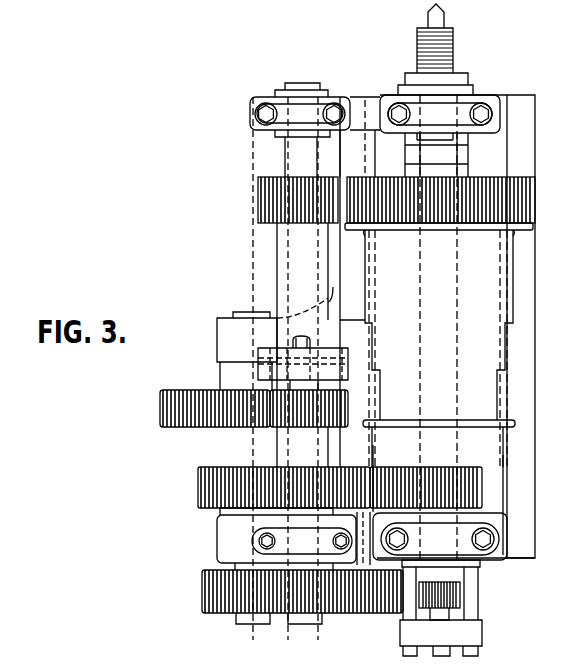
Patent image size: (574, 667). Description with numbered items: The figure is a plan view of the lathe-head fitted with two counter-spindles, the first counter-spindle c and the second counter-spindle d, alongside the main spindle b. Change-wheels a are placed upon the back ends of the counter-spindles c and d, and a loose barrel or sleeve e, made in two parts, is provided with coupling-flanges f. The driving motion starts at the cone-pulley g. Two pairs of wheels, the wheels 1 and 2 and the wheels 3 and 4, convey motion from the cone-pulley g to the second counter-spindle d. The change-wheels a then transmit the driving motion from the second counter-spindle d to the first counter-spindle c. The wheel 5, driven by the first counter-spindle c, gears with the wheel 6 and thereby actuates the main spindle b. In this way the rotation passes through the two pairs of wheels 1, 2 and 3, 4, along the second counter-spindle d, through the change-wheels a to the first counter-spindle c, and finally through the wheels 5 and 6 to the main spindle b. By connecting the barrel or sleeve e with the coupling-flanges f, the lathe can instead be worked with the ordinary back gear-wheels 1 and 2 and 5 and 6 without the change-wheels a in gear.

The wheel 1 is at (462, 491).
The wheel 2 is at (215, 492).
The wheel 3 is at (322, 402).
The wheel 4 is at (180, 408).
The wheel 5 is at (285, 199).
The wheel 6 is at (513, 197).
The change-wheels a is at (210, 592).
The main spindle b is at (441, 607).
The counter-spindle c is at (306, 628).
The second counter-spindle d is at (255, 616).
The loose barrel or sleeve e is at (302, 345).
The coupling-flanges f is at (272, 353).
The cone-pulley g is at (439, 327).